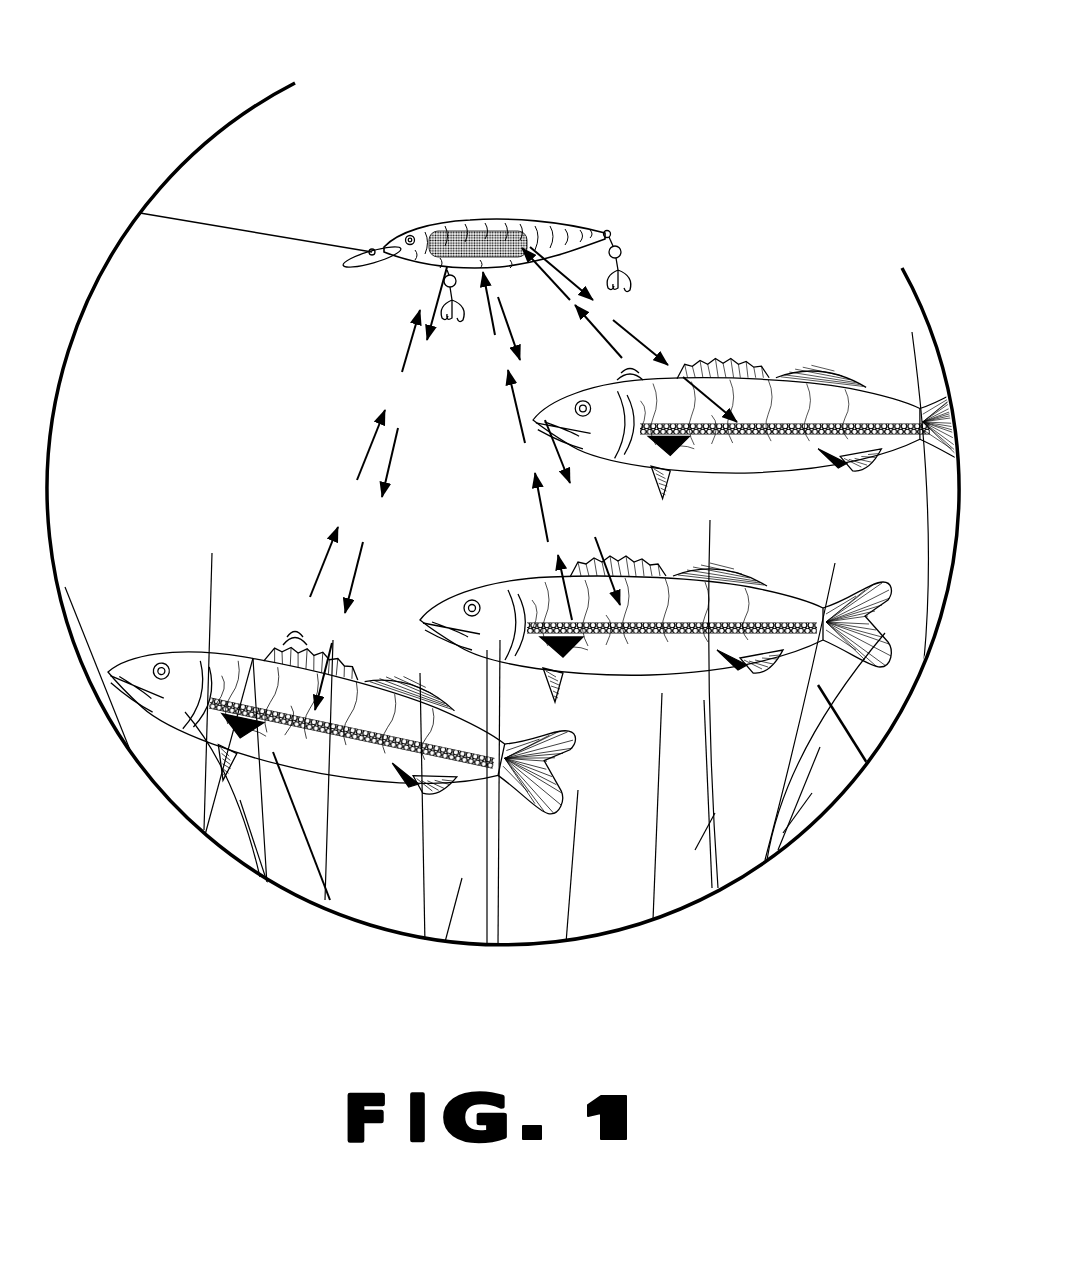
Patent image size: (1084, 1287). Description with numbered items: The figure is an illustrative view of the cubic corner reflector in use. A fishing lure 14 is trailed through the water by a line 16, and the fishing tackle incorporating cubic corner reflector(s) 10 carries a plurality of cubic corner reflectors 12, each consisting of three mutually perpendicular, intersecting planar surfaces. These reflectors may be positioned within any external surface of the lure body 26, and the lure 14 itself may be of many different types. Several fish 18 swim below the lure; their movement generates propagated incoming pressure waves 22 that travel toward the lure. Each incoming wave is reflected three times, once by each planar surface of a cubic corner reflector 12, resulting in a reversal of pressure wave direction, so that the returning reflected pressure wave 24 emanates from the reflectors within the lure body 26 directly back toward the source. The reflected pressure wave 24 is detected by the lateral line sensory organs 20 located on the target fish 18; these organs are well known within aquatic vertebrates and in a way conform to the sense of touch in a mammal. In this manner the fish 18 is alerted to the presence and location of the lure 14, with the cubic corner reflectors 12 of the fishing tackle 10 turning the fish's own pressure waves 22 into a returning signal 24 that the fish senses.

The fishing tackle incorporating cubic corner reflector(s) 10 is at (486, 203).
The cubic corner reflectors 12 is at (478, 239).
The fishing lure 14 is at (539, 189).
The line 16 is at (256, 208).
The fish 18 is at (538, 521).
The lateral line sensory organs 20 is at (373, 982).
The incoming pressure waves 22 is at (307, 637).
The reflected pressure wave 24 is at (523, 397).
The lure body 26 is at (540, 146).